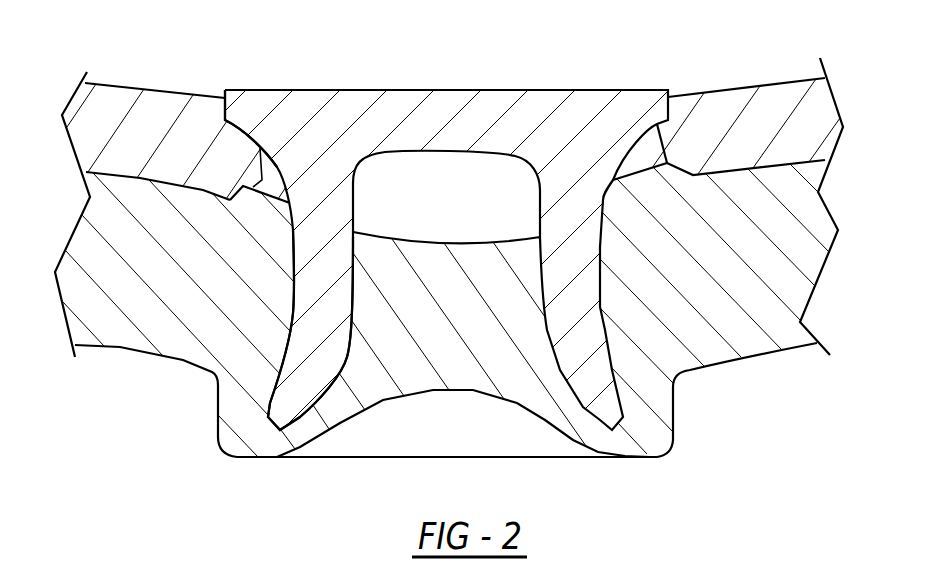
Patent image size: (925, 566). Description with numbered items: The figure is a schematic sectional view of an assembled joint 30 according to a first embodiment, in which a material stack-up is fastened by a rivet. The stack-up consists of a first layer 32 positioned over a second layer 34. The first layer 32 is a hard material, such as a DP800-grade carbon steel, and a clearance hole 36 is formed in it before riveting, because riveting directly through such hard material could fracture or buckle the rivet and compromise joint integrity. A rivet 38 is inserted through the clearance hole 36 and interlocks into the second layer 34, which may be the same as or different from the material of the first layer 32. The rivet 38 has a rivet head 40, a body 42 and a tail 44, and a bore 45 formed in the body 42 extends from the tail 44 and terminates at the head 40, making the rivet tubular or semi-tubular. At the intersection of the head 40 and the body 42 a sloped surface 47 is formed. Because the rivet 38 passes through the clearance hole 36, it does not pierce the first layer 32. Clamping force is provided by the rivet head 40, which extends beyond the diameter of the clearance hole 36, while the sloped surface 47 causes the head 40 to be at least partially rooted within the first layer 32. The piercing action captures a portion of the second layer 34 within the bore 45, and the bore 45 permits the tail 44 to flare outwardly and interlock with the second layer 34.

The joint 30 is at (143, 435).
The first layer 32 is at (742, 125).
The second layer 34 is at (712, 327).
The clearance hole 36 is at (268, 180).
The rivet 38 is at (293, 300).
The rivet head 40 is at (440, 127).
The body 42 is at (315, 330).
The tail 44 is at (603, 407).
The bore 45 is at (407, 187).
The sloped surface 47 is at (228, 122).